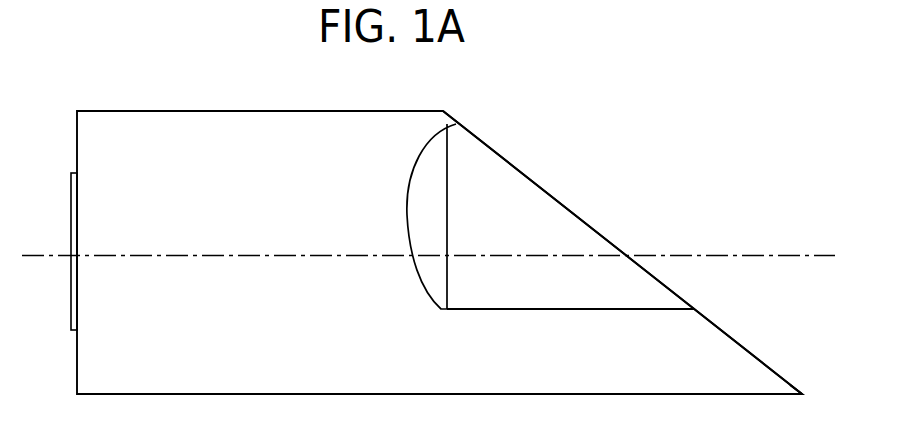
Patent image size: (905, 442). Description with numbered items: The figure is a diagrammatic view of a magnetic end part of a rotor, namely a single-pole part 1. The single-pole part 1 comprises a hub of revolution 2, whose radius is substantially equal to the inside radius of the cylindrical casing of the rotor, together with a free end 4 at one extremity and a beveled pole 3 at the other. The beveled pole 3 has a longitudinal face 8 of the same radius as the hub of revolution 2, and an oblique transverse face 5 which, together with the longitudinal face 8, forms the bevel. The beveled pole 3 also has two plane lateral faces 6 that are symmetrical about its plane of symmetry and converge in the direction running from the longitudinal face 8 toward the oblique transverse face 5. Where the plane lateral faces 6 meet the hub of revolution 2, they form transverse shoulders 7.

The single-pole part 1 is at (190, 102).
The hub of revolution 2 is at (188, 383).
The beveled pole 3 is at (733, 402).
The free end 4 is at (90, 353).
The oblique transverse face 5 is at (567, 207).
The plane lateral faces 6 is at (512, 188).
The transverse shoulders 7 is at (426, 150).
The longitudinal face 8 is at (593, 394).